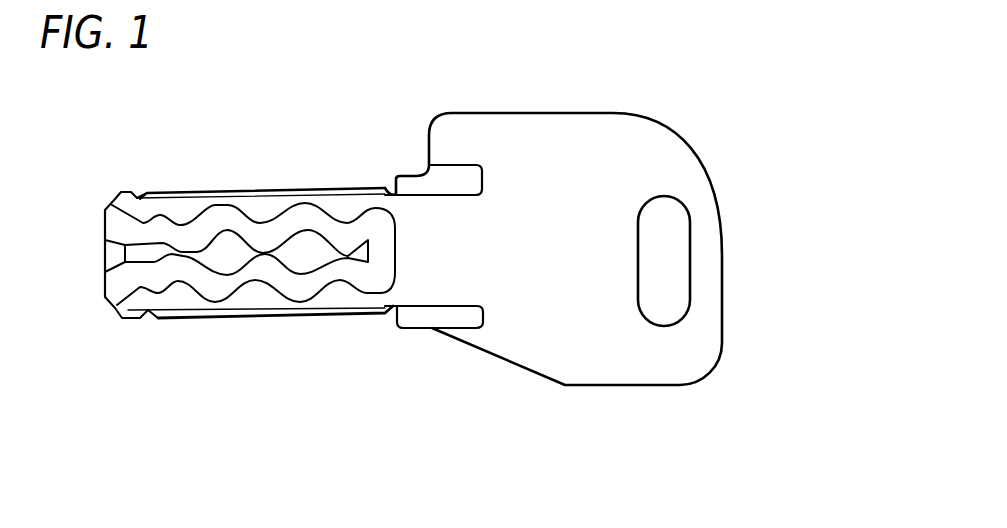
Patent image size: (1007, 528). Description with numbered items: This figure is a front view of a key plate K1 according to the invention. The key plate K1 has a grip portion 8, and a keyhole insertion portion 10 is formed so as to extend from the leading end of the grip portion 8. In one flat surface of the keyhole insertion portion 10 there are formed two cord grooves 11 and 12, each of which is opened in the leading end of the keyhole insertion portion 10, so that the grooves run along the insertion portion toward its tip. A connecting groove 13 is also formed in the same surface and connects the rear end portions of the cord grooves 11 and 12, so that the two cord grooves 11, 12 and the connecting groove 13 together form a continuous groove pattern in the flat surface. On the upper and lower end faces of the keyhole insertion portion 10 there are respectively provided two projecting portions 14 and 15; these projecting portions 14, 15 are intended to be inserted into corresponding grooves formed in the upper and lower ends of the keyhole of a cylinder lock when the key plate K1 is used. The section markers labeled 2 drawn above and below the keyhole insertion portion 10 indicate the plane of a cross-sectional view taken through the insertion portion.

The key plate K1 is at (664, 96).
The grip portion 8 is at (695, 187).
The keyhole insertion portion 10 is at (145, 203).
The cord groove 11 is at (202, 230).
The cord groove 12 is at (190, 277).
The connecting groove 13 is at (387, 253).
The projecting portion 14 is at (287, 188).
The projecting portion 15 is at (268, 318).
The section line 2- 2 is at (380, 179).